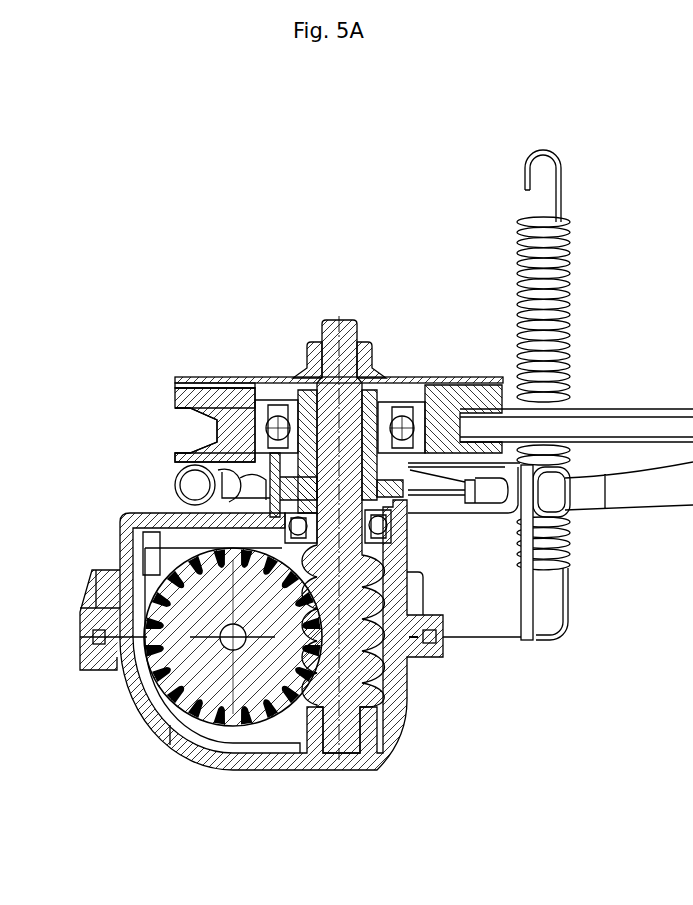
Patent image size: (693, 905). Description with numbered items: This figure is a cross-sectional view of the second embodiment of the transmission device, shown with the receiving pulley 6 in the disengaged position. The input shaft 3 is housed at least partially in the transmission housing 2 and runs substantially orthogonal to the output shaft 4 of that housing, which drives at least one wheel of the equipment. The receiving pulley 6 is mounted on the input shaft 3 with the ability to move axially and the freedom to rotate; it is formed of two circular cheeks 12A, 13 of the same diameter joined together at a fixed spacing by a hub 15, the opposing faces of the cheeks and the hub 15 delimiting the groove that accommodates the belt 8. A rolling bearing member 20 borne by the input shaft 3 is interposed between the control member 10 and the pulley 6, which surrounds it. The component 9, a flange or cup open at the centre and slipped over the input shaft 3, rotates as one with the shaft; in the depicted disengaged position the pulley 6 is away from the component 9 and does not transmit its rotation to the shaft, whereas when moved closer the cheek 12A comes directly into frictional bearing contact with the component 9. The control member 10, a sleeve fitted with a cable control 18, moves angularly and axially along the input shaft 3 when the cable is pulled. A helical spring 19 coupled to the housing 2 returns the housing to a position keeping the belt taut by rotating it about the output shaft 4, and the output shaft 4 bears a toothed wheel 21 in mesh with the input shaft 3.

The transmission housing 2 is at (313, 763).
The input shaft 3 is at (331, 343).
The output shaft 4 is at (232, 650).
The receiving pulley 6 is at (197, 390).
The belt 8 is at (183, 427).
The component 9 is at (268, 377).
The control member 10 is at (379, 397).
The circular cheek 12A is at (183, 400).
The circular cheek 13 is at (185, 455).
The hub 15 is at (228, 425).
The cable control 18 is at (643, 497).
The spring 19 is at (571, 279).
The rolling bearing member 20 is at (389, 412).
The toothed wheel 21 is at (168, 722).